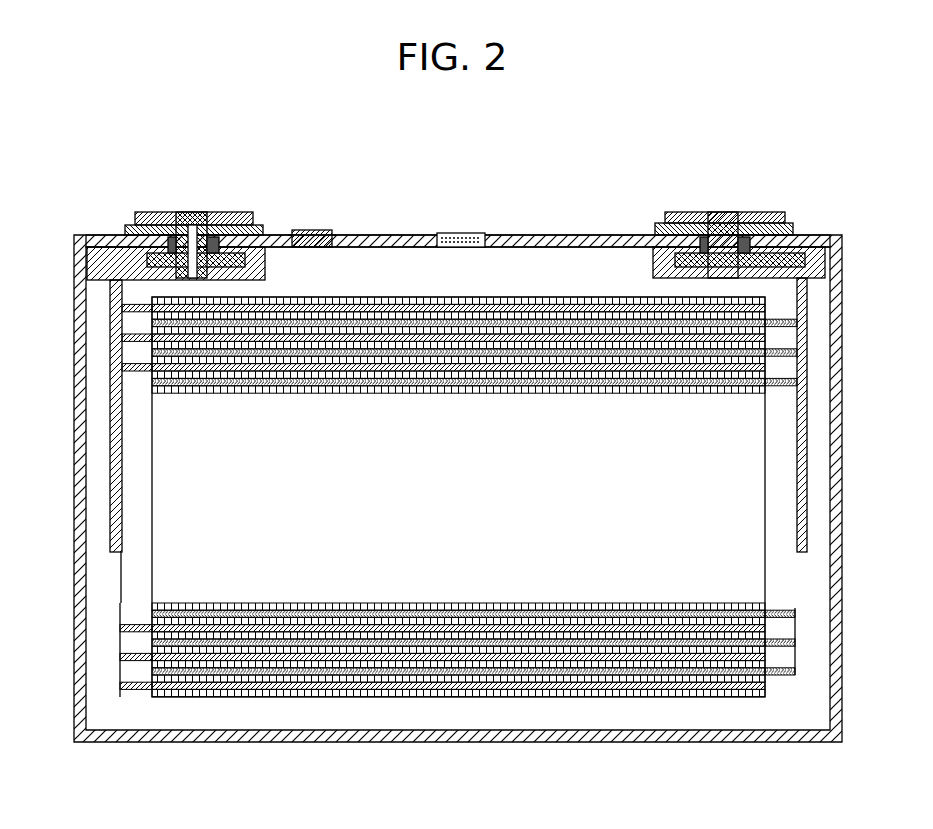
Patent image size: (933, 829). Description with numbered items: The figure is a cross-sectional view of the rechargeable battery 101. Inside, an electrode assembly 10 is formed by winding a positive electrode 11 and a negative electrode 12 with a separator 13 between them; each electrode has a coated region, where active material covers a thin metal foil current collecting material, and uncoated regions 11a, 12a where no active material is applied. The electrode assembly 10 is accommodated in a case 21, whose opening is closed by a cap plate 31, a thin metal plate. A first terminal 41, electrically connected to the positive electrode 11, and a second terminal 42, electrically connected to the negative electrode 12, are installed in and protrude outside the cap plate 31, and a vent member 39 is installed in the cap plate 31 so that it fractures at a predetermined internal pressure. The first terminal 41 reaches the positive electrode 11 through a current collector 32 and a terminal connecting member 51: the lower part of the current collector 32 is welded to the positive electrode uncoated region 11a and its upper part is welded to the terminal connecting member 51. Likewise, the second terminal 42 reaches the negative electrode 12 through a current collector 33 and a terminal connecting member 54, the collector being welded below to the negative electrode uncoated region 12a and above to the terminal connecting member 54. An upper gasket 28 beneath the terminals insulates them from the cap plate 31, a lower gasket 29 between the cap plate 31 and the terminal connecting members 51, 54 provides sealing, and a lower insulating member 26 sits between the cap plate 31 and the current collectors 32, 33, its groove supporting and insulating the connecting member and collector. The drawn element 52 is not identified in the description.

The rechargeable battery 101 is at (468, 118).
The electrode assembly 10 is at (466, 546).
The positive electrode 11 is at (238, 690).
The positive electrode uncoated region 11a is at (138, 690).
The negative electrode 12 is at (703, 697).
The negative electrode uncoated region 12a is at (788, 677).
The separator 13 is at (427, 692).
The case 21 is at (838, 440).
The lower insulating member 26 is at (93, 261).
The upper gasket 28 is at (258, 226).
The lower gasket 29 is at (175, 213).
The cap plate 31 is at (530, 235).
The current collector 32 is at (112, 486).
The current collector 33 is at (805, 505).
The vent member 39 is at (478, 233).
The first terminal 41 is at (137, 214).
The second terminal 42 is at (683, 212).
The terminal connecting member 51 is at (218, 212).
The negative terminal rivet 52 is at (188, 212).
The terminal connecting member 54 is at (720, 212).